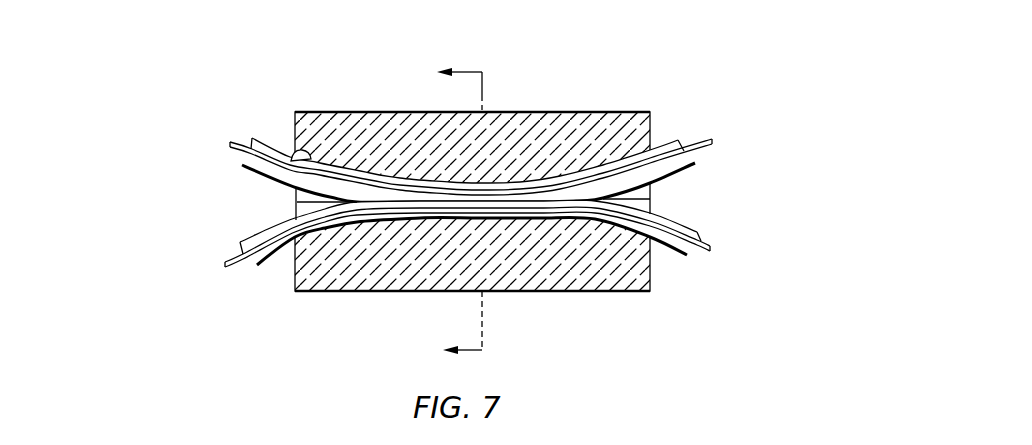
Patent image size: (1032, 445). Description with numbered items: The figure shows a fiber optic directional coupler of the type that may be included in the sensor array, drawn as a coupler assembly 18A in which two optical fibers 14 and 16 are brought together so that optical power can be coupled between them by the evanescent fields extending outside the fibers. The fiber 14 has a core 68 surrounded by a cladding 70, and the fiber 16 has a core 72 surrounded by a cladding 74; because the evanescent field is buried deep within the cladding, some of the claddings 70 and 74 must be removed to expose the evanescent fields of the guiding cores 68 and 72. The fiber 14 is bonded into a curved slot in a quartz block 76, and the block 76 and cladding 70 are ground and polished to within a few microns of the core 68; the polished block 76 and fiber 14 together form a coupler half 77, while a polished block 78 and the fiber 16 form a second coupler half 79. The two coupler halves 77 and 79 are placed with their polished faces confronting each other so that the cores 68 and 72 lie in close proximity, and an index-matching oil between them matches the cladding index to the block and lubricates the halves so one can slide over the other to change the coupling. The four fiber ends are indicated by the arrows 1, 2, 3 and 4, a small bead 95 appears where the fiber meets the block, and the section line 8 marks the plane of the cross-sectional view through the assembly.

The first fiber end 1 is at (197, 143).
The second fiber end 2 is at (744, 137).
The third fiber end 3 is at (195, 260).
The fourth fiber end 4 is at (744, 253).
The section line 8- 8 is at (449, 212).
The optical fiber 14 is at (233, 115).
The optical fiber 16 is at (224, 234).
The coupler assembly 18A is at (339, 327).
The core 68 is at (714, 147).
The cladding 70 is at (262, 138).
The core 72 is at (698, 257).
The cladding 74 is at (277, 263).
The quartz block 76 is at (584, 111).
The coupler half 77 is at (554, 90).
The polished block 78 is at (602, 293).
The coupler half 79 is at (564, 308).
The adhesive bead 95 is at (290, 150).